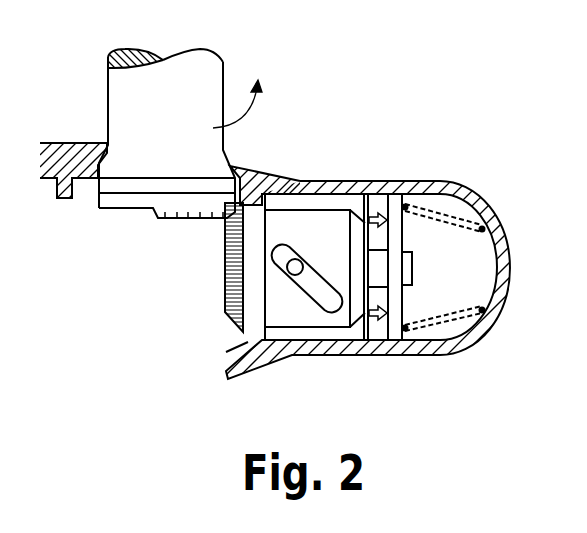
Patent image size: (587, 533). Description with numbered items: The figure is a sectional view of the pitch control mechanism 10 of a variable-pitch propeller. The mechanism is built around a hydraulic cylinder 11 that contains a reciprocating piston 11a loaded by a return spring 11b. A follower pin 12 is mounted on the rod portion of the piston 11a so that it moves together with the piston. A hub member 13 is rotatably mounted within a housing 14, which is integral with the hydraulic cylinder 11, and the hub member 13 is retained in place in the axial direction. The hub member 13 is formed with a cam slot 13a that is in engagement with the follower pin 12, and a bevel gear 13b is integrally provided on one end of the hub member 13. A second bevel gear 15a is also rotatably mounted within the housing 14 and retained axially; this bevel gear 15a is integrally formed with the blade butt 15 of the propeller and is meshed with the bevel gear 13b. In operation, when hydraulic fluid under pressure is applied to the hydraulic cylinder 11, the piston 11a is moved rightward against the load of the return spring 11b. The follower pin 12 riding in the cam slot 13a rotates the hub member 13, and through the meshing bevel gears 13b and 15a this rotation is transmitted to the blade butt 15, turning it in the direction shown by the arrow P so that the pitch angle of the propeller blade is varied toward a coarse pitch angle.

The pitch control mechanism 10 is at (283, 223).
The hydraulic cylinder 11 is at (428, 188).
The reciprocating piston 11a is at (393, 333).
The return spring 11b is at (462, 313).
The follower pin 12 is at (294, 272).
The hub member 13 is at (315, 232).
The cam slot 13a is at (328, 297).
The bevel gear 13b is at (224, 292).
The housing 14 is at (268, 185).
The blade butt 15 is at (113, 98).
The bevel gear 15a is at (170, 219).